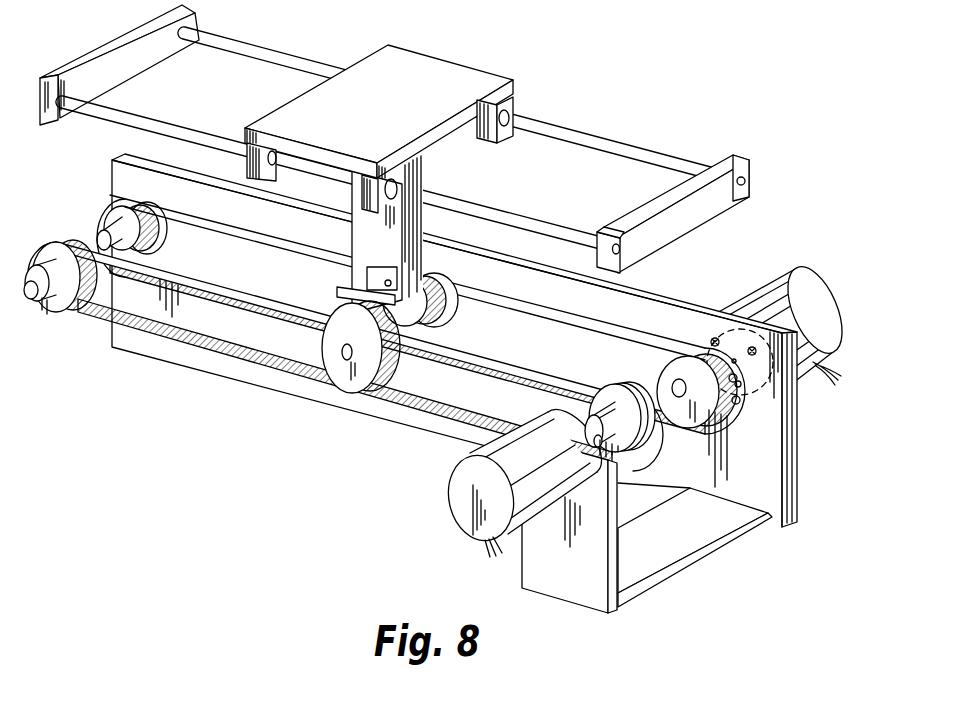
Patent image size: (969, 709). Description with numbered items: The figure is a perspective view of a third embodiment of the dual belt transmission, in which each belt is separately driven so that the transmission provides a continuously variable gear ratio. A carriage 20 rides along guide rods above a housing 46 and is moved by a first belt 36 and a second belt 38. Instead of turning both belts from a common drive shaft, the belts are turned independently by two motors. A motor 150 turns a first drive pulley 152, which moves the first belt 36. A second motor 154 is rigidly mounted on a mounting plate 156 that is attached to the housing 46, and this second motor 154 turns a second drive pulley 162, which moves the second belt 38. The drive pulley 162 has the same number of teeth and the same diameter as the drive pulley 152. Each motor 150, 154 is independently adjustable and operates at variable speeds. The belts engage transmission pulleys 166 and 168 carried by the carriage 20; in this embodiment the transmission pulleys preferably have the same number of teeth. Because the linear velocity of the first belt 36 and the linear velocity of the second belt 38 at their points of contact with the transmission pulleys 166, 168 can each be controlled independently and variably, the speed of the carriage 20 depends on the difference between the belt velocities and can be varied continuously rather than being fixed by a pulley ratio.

The carriage 20 is at (481, 64).
The first belt 36 is at (630, 328).
The second belt 38 is at (445, 415).
The housing 46 is at (777, 483).
The motor 150 is at (802, 268).
The first drive pulley 152 is at (733, 407).
The second motor 154 is at (463, 492).
The mounting plate 156 is at (533, 565).
The second drive pulley 162 is at (625, 447).
The transmission pulley 166 is at (425, 357).
The transmission pulley 168 is at (343, 297).